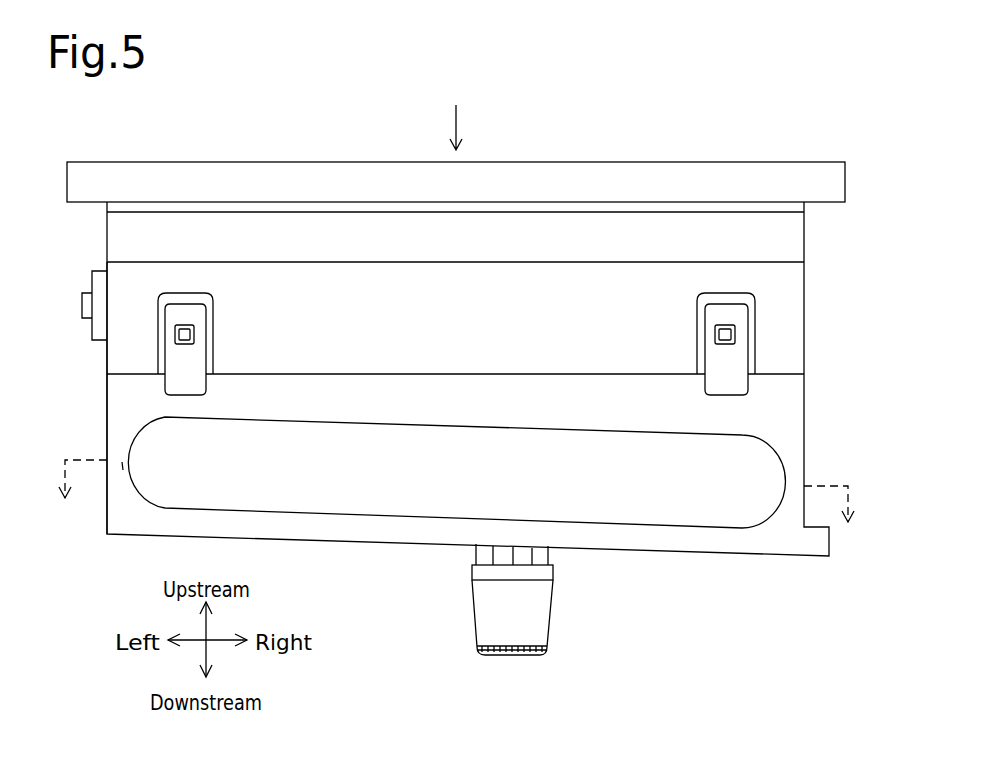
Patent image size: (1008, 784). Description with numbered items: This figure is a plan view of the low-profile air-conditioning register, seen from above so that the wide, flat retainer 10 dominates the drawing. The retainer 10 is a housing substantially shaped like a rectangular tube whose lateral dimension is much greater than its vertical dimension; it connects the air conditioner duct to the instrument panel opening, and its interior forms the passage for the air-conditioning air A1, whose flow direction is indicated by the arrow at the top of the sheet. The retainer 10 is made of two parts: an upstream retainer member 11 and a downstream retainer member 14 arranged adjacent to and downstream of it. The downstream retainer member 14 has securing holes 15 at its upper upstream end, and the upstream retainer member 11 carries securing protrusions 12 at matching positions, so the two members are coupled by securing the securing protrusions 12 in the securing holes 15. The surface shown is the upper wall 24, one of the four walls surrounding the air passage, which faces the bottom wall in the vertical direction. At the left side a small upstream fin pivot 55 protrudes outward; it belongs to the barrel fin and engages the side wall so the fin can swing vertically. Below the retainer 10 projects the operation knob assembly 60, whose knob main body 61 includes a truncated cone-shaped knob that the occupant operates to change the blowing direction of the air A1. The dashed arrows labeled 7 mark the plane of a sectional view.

The air-conditioning air A1 is at (457, 118).
The retainer 10 is at (507, 379).
The upstream retainer member 11 is at (792, 340).
The downstream retainer member 14 is at (486, 424).
The securing protrusion 12 is at (186, 326).
The securing hole 15 is at (194, 340).
The upper wall 24 is at (118, 367).
The upstream fin pivot 55 is at (82, 305).
The section line 7 is at (455, 509).
The operation knob assembly 60 is at (566, 599).
The knob main body 61 is at (540, 607).